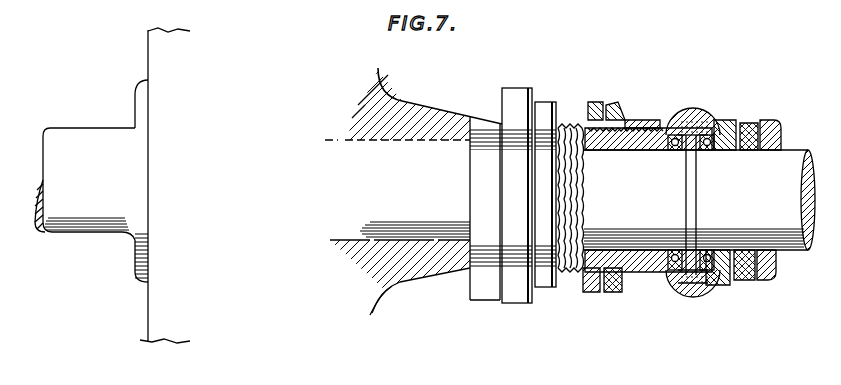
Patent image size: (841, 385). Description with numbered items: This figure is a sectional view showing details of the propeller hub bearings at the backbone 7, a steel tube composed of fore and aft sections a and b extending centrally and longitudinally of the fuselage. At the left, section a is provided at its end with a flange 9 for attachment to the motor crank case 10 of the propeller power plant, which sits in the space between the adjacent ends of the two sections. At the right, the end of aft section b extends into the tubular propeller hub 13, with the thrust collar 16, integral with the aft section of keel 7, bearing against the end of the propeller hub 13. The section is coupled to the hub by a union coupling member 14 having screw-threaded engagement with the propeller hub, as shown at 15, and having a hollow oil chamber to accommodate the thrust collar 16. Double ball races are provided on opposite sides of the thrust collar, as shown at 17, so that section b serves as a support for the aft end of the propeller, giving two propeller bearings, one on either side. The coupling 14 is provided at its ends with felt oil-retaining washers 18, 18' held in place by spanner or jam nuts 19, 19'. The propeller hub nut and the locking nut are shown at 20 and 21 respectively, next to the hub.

The backbone 7 is at (100, 218).
The flange 9 is at (140, 96).
The motor crank case 10 is at (148, 46).
The tubular propeller hub 13 is at (452, 268).
The union coupling member 14 is at (681, 116).
The screw-threaded engagement 15 is at (636, 148).
The thrust collar 16 is at (686, 180).
The double ball races 17 is at (716, 125).
The felt oil-retaining washer 18 is at (603, 299).
The felt oil-retaining washer 18' is at (755, 186).
The spanner or jam nut 19 is at (576, 291).
The spanner or jam nut 19' is at (780, 209).
The propeller hub nut 20 is at (522, 98).
The locking nut 21 is at (546, 112).